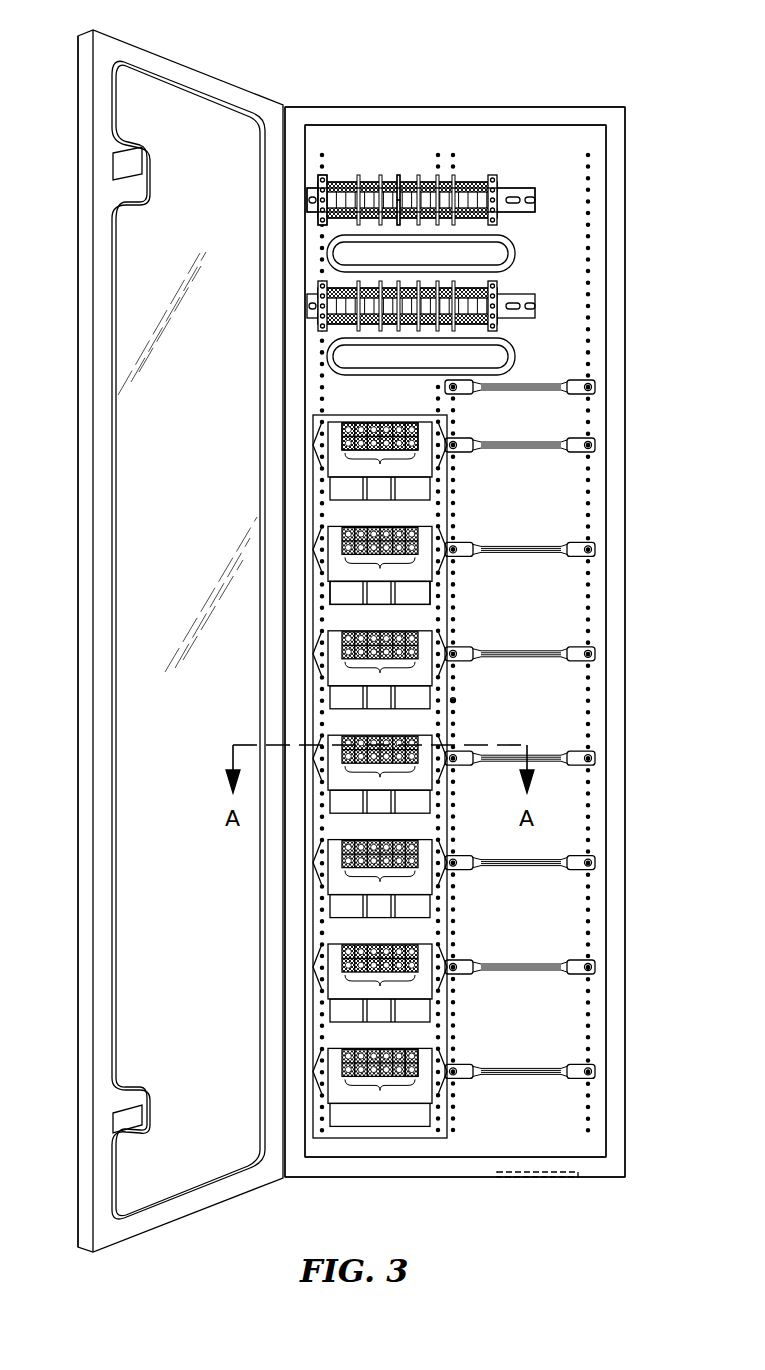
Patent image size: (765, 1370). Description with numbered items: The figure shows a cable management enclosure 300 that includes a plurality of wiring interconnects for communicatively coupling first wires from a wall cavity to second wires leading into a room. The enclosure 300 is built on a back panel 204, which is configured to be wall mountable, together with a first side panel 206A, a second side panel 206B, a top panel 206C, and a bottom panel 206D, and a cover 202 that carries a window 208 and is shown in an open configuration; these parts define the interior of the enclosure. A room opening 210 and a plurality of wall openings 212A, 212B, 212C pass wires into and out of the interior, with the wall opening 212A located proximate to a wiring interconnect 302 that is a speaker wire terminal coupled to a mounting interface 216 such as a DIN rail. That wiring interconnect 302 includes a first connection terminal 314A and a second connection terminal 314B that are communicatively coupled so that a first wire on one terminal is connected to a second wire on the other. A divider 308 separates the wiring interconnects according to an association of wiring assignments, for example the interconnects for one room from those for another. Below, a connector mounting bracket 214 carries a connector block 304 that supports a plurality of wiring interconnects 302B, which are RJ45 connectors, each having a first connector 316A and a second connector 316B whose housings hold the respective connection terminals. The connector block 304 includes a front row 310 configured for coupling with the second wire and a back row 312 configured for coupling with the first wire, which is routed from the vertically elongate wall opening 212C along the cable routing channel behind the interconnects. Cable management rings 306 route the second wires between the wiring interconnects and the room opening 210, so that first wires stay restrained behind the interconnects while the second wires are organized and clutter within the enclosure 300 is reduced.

The cover 202 is at (78, 638).
The back panel 204 is at (455, 128).
The first side panel 206A is at (612, 209).
The second side panel 206B is at (293, 318).
The top panel 206C is at (565, 116).
The bottom panel 206D is at (408, 1167).
The window 208 is at (200, 1160).
The room opening 210 is at (540, 1178).
The wall opening 212A is at (505, 258).
The wall opening 212B is at (505, 361).
The wall opening 212C is at (383, 598).
The connector mounting bracket 214 is at (460, 700).
The mounting interface 216 is at (528, 188).
The cable management enclosure 300 is at (600, 52).
The wiring interconnect 302 is at (470, 180).
The wiring interconnect 302B is at (438, 944).
The connector block 304 is at (438, 834).
The cable management ring 306 is at (520, 651).
The divider 308 is at (383, 180).
The front row 310 is at (380, 455).
The back row 312 is at (417, 416).
The first connection terminal 314A is at (401, 180).
The second connection terminal 314B is at (397, 223).
The first connector 316A is at (418, 1050).
The second connector 316B is at (418, 1078).